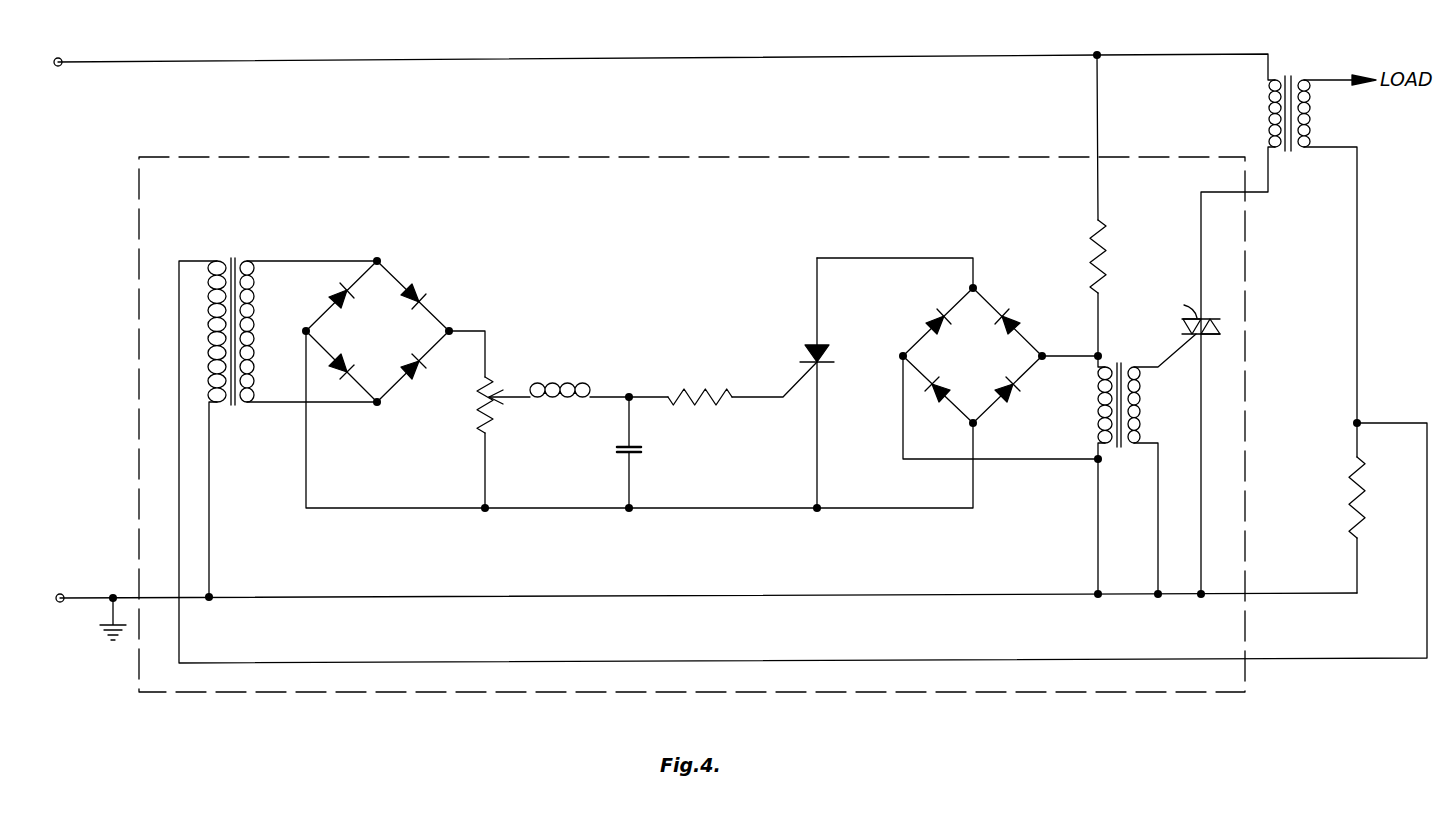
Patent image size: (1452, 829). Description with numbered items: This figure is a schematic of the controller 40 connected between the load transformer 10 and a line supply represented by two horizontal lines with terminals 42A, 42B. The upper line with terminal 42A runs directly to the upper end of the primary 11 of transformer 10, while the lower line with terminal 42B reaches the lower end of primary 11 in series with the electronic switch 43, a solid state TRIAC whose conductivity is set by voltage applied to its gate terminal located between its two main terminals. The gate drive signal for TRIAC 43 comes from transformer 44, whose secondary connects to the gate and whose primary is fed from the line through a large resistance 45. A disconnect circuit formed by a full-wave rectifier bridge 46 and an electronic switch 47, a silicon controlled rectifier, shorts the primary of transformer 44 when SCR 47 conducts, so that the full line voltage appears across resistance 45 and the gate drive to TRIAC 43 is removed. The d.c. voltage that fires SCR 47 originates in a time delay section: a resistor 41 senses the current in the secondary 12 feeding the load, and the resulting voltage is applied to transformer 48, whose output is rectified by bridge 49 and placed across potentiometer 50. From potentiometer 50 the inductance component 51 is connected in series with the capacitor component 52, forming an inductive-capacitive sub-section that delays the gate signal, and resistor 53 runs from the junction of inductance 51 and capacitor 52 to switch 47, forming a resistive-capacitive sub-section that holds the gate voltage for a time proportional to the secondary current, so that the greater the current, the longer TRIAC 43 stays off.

The transformer 10 is at (1289, 78).
The primary 11 is at (1272, 110).
The secondary 12 is at (1308, 112).
The controller 40 is at (1246, 416).
The resistor 41 is at (1366, 493).
The terminal 42A is at (75, 53).
The terminal 42B is at (78, 589).
The electronic switch 43 is at (1212, 318).
The transformer 44 is at (1120, 365).
The large resistance 45 is at (1106, 266).
The full-wave rectifier bridge 46 is at (972, 355).
The electronic switch 47 is at (823, 342).
The transformer 48 is at (232, 256).
The bridge 49 is at (377, 331).
The potentiometer 50 is at (480, 398).
The inductance component 51 is at (573, 385).
The capacitor component 52 is at (618, 447).
The resistor 53 is at (692, 392).